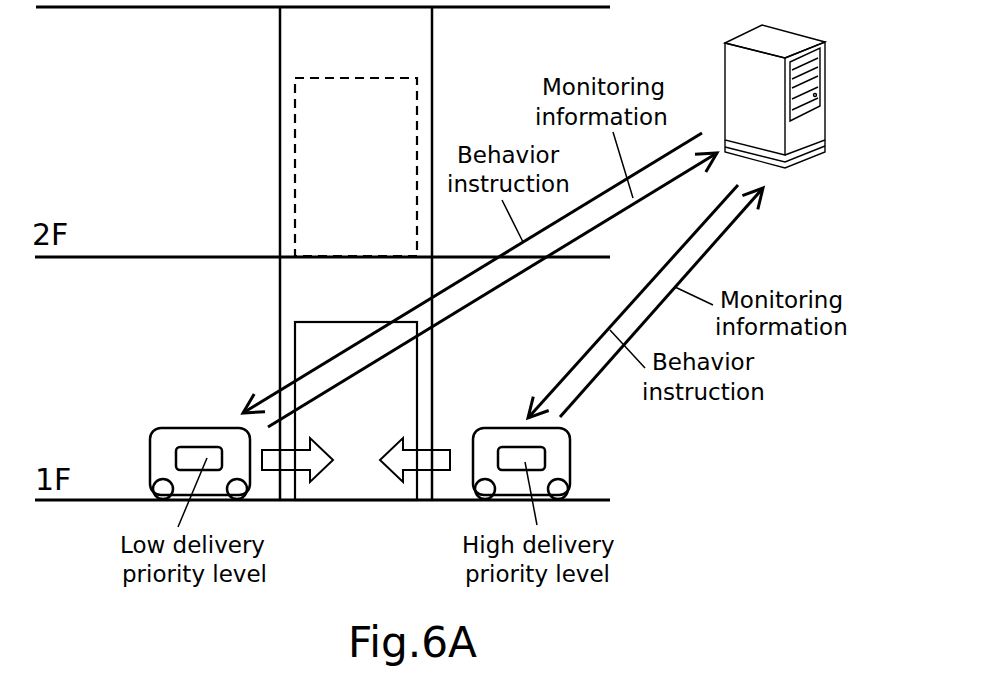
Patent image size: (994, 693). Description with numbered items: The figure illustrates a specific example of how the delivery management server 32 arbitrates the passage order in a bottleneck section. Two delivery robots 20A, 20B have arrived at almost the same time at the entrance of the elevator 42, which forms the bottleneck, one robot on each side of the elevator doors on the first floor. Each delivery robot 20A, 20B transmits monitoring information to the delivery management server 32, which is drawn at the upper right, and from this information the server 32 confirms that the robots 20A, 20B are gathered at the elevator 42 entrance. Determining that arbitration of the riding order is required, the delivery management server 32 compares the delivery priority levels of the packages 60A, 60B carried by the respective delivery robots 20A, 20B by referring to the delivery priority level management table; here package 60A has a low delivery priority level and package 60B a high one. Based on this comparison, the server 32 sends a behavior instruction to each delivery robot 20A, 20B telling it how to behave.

The delivery management server 32 is at (725, 97).
The elevator 42 is at (277, 322).
The delivery robot 20A is at (150, 448).
The delivery robot 20B is at (572, 458).
The package 60A is at (193, 448).
The package 60B is at (510, 448).